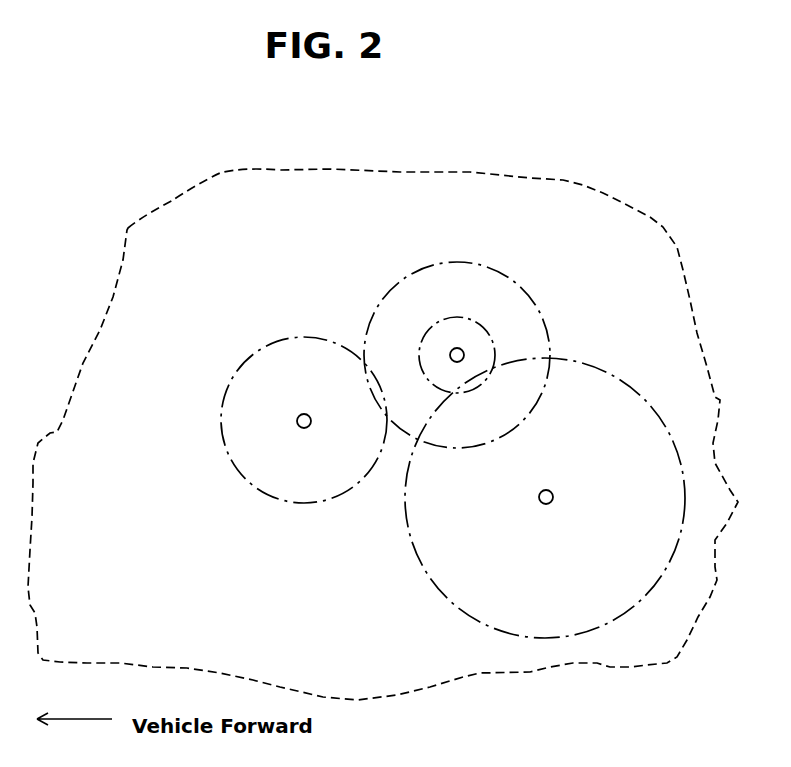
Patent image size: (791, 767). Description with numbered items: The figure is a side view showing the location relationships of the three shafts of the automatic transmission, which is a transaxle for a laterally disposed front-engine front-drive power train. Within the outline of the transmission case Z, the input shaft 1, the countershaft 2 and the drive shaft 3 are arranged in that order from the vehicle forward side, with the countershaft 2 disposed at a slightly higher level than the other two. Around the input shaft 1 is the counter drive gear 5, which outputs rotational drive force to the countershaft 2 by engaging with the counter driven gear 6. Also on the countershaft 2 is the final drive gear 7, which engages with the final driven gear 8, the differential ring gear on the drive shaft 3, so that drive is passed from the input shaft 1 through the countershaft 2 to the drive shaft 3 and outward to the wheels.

The input shaft 1 is at (294, 439).
The countershaft 2 is at (473, 342).
The drive shaft 3 is at (535, 514).
The counter drive gear 5 is at (262, 347).
The counter driven gear 6 is at (398, 280).
The final drive gear 7 is at (450, 316).
The final driven gear 8 is at (418, 558).
The transmission case Z is at (620, 200).